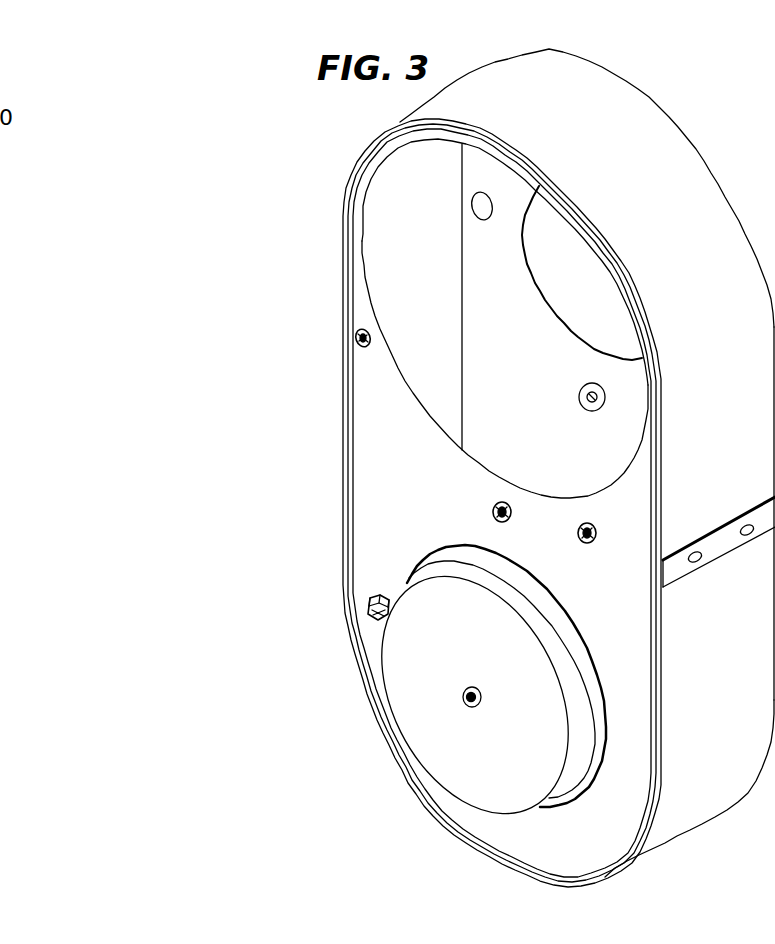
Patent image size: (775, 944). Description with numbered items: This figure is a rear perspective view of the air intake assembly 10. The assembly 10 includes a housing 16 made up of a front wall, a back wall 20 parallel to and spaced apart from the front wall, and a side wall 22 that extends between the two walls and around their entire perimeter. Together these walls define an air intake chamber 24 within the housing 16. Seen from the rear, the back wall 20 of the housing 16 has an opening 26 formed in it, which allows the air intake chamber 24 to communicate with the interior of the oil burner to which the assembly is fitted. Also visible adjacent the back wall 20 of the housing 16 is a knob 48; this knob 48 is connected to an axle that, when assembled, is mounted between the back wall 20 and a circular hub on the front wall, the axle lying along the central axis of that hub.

The air intake assembly 10 is at (314, 170).
The housing 16 is at (729, 152).
The back wall 20 is at (387, 455).
The side wall 22 is at (575, 92).
The air intake chamber 24 is at (421, 300).
The opening 26 is at (410, 353).
The knob 48 is at (415, 642).